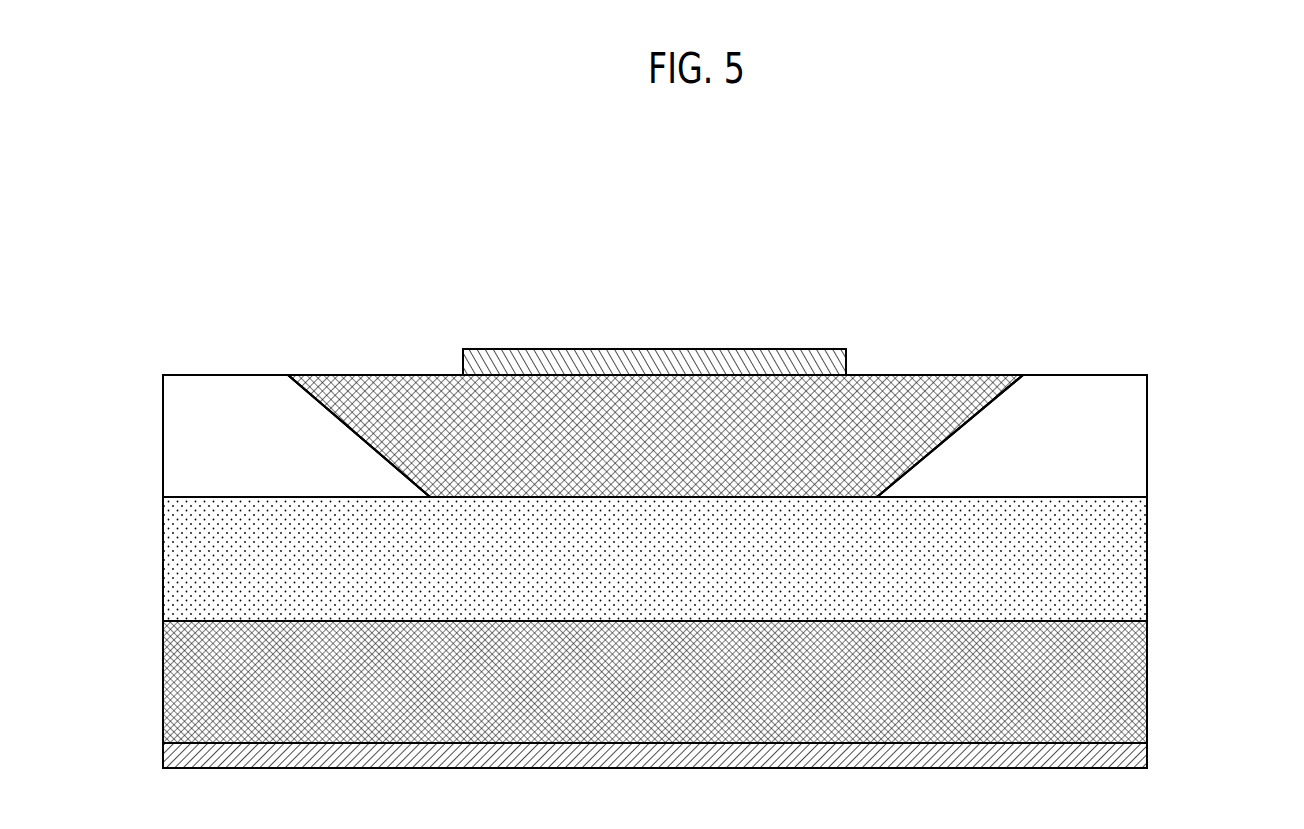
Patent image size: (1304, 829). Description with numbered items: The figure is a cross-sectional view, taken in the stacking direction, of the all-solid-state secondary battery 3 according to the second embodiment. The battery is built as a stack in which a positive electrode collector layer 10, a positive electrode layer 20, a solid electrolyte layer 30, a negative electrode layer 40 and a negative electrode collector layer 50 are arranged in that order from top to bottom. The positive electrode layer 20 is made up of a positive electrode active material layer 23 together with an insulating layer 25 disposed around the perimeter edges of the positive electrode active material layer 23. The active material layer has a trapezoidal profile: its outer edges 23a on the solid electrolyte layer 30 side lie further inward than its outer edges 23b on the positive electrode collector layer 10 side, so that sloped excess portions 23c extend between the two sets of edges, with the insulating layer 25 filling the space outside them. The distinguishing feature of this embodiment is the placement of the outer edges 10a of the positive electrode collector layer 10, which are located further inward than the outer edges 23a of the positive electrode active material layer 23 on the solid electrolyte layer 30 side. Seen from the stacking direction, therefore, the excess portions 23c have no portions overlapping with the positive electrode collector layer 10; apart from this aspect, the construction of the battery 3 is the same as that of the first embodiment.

The all-solid-state secondary battery 3 is at (695, 287).
The positive electrode collector layer 10 is at (765, 350).
The outer edges of the positive electrode collector layer 10a is at (463, 361).
The positive electrode layer 20 is at (1217, 403).
The positive electrode active material layer 23 is at (970, 397).
The outer edges of the positive electrode active material layer on the solid electro 23a is at (430, 497).
The outer edges of the positive electrode active material layer on the positive elec 23b is at (288, 377).
The excess portions 23c is at (431, 375).
The insulating layer 25 is at (1115, 443).
The solid electrolyte layer 30 is at (1120, 608).
The negative electrode layer 40 is at (1120, 692).
The negative electrode collector layer 50 is at (1122, 758).